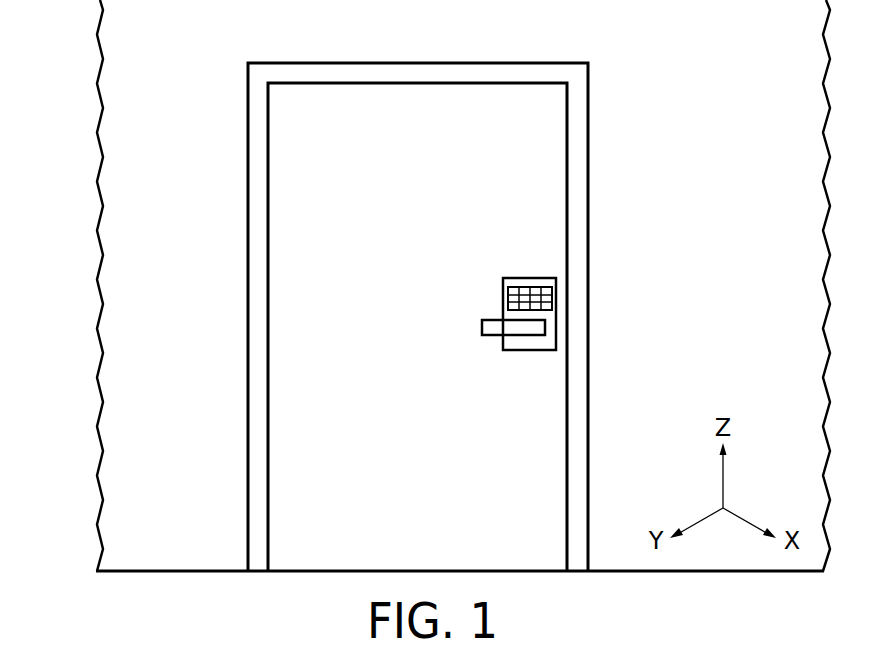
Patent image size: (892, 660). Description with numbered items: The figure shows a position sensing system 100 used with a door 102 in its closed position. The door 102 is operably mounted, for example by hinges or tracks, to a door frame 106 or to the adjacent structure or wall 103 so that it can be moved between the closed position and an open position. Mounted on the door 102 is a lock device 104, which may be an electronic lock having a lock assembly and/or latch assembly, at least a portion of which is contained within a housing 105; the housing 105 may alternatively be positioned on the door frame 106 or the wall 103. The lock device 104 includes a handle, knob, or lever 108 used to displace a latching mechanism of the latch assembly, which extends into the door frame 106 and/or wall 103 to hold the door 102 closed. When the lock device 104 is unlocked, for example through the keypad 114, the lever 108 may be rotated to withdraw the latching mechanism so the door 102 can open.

The position sensing system 100 is at (487, 317).
The door 102 is at (441, 227).
The wall 103 is at (128, 273).
The lock device 104 is at (539, 304).
The housing 105 is at (527, 278).
The door frame 106 is at (578, 158).
The lever 108 is at (490, 334).
The keypad 114 is at (507, 297).